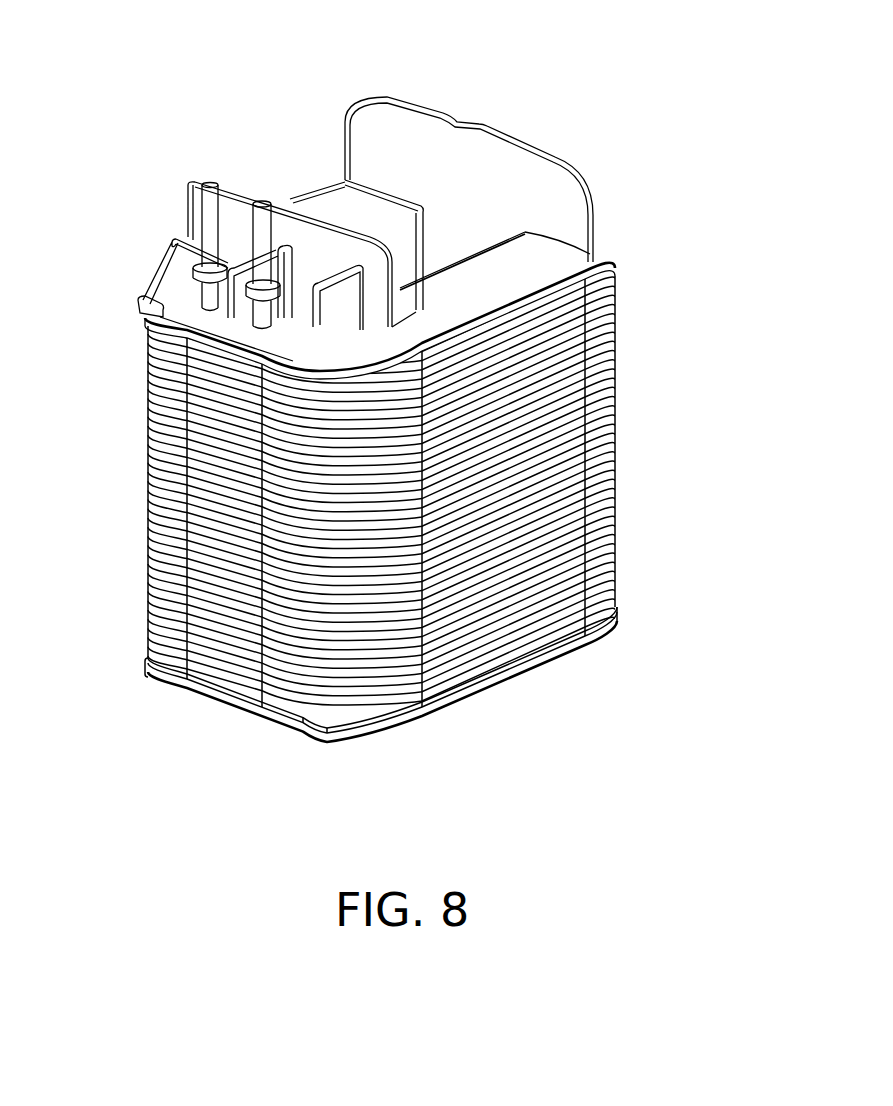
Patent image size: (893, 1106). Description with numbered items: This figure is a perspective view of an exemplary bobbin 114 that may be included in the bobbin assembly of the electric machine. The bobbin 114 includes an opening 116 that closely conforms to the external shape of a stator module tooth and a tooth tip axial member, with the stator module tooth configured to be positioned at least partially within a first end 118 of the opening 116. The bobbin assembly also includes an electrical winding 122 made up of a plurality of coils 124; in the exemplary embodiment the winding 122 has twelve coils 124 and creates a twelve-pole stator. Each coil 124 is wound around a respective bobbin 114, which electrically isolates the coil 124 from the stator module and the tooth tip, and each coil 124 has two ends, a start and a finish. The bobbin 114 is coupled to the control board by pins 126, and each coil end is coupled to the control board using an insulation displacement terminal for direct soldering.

The bobbin 114 is at (578, 86).
The opening 116 is at (448, 247).
The first end 118 is at (598, 290).
The electrical winding 122 is at (622, 430).
The coil 124 is at (148, 548).
The pin 126 is at (262, 218).